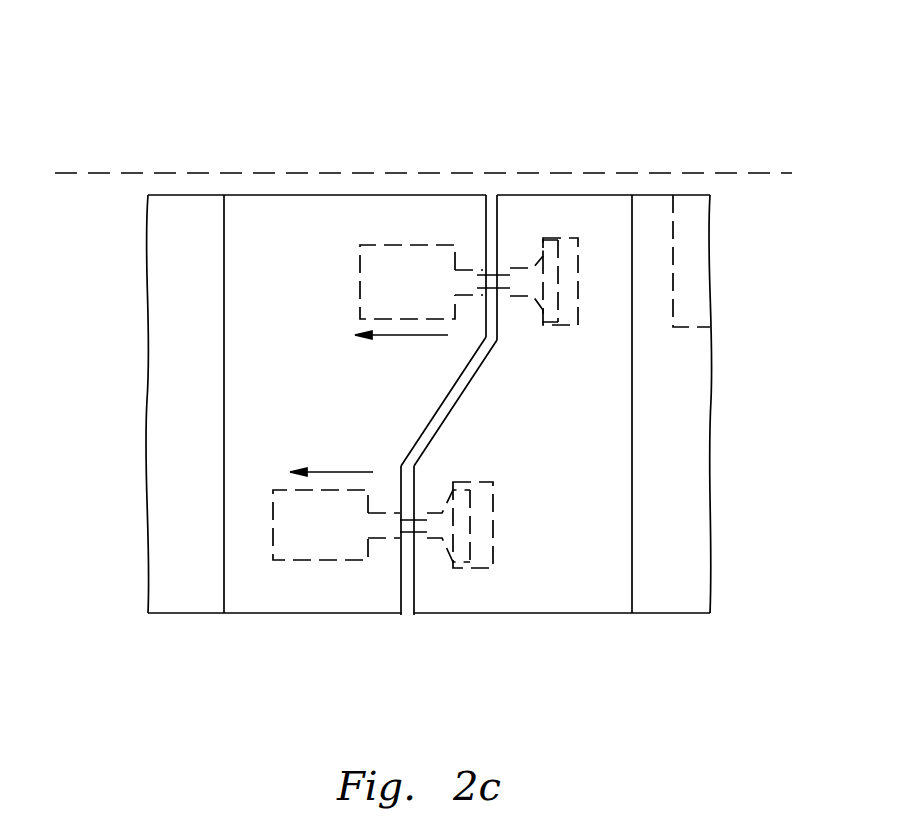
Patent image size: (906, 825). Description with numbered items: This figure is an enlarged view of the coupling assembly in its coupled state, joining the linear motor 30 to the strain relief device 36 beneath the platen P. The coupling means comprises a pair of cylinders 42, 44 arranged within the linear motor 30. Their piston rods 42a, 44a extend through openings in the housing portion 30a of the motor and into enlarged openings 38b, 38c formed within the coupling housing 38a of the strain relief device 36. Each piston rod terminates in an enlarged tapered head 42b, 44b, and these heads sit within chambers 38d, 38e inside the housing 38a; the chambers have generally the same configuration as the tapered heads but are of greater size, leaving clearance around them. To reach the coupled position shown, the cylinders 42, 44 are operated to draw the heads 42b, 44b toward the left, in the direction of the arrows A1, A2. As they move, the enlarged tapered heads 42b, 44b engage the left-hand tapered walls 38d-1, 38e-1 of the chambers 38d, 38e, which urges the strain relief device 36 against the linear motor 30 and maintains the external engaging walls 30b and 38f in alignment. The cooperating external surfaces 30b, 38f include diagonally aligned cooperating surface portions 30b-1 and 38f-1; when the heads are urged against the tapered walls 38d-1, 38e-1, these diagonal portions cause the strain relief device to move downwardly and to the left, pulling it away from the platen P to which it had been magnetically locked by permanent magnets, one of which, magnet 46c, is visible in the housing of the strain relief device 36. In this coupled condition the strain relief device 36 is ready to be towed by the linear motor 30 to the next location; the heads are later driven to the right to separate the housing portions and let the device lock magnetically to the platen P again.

The linear motor 30 is at (182, 187).
The housing portion 30a is at (277, 210).
The external engaging wall 30b is at (403, 615).
The diagonally aligned cooperating surface portion 30b-1 is at (435, 415).
The platen P is at (122, 176).
The strain relief device 36 is at (663, 598).
The coupling housing 38a is at (565, 613).
The enlarged opening 38b is at (515, 268).
The enlarged opening 38c is at (433, 545).
The chamber 38d is at (548, 240).
The left-hand tapered wall 38d-1 is at (535, 237).
The chamber 38e is at (493, 535).
The left-hand tapered wall 38e-1 is at (438, 470).
The external engaging wall 38f is at (413, 615).
The diagonally aligned cooperating surface portion 38f-1 is at (472, 388).
The cylinder 42 is at (415, 244).
The piston rod 42a is at (477, 270).
The enlarged tapered head 42b is at (545, 327).
The cylinder 44 is at (308, 562).
The piston rod 44a is at (377, 540).
The enlarged tapered head 44b is at (490, 490).
The permanent magnet 46c is at (680, 330).
The arrow A1 is at (382, 338).
The arrow A2 is at (335, 472).